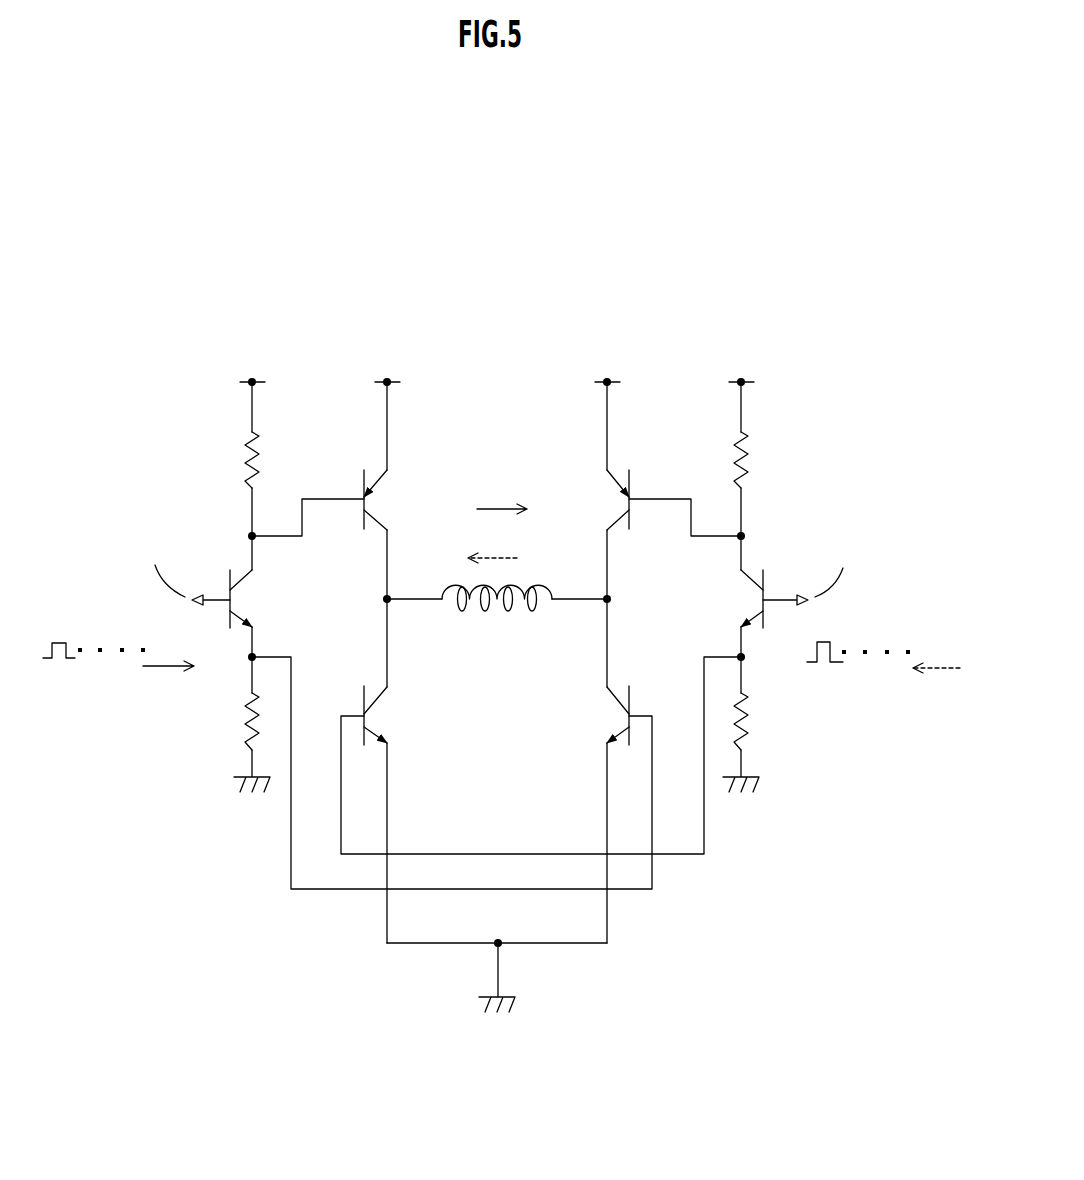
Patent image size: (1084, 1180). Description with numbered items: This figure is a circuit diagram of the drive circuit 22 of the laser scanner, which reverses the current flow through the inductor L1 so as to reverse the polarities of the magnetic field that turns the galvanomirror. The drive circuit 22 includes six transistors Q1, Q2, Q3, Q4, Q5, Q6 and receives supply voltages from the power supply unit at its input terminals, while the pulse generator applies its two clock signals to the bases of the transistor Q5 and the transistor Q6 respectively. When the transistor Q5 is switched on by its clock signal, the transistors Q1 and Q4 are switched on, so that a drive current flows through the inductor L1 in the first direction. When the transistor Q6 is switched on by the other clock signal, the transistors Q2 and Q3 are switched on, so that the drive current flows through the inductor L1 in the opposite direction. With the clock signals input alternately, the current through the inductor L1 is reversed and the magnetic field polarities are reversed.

The drive circuit 22 is at (723, 272).
The transistor Q1 is at (355, 491).
The transistor Q2 is at (641, 491).
The transistor Q3 is at (355, 709).
The transistor Q4 is at (638, 709).
The transistor Q5 is at (224, 588).
The transistor Q6 is at (771, 588).
The inductor L1 is at (497, 626).